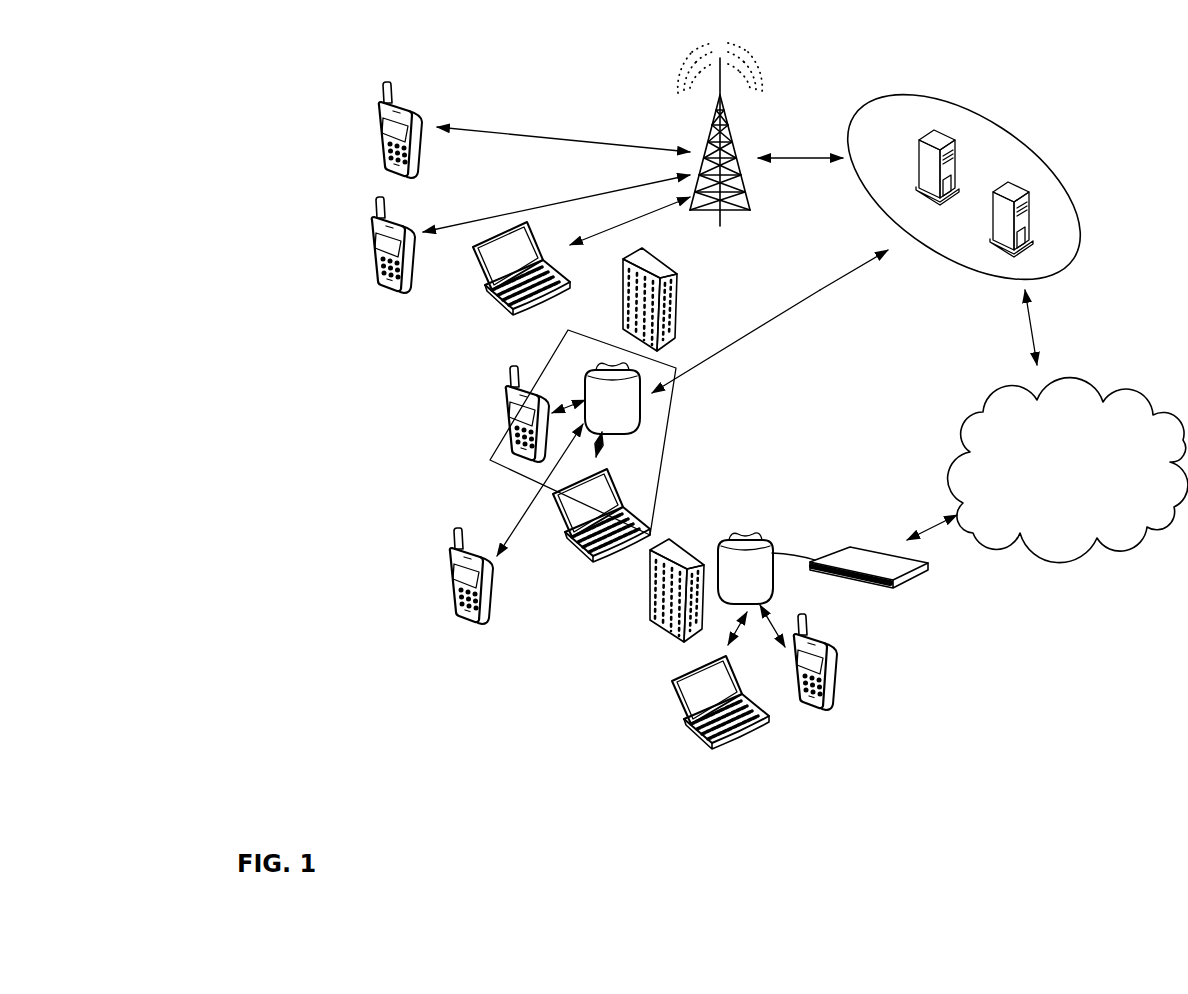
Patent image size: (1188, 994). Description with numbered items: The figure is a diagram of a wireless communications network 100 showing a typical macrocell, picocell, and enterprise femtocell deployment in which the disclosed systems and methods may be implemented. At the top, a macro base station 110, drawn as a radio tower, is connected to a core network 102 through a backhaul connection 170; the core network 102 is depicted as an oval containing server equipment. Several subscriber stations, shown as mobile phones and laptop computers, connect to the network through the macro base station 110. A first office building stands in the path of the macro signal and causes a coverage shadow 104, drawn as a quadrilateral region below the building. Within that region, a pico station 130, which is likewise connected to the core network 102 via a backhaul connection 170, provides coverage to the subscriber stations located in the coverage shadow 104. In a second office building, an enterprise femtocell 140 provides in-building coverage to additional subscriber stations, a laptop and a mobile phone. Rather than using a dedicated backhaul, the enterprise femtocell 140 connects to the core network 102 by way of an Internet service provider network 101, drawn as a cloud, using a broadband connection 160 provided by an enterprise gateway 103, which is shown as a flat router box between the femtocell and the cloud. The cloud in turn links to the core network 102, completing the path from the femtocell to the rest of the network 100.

The communications network 100 is at (1078, 98).
The Internet service provider (ISP) network 101 is at (960, 430).
The core network 102 is at (1053, 168).
The enterprise gateway 103 is at (920, 577).
The coverage shadow 104 is at (668, 440).
The macro base station 110 is at (740, 158).
The pico station 130 is at (587, 373).
The enterprise femtocell 140 is at (772, 545).
The broadband connection 160 is at (935, 525).
The backhaul connection 170 is at (797, 158).